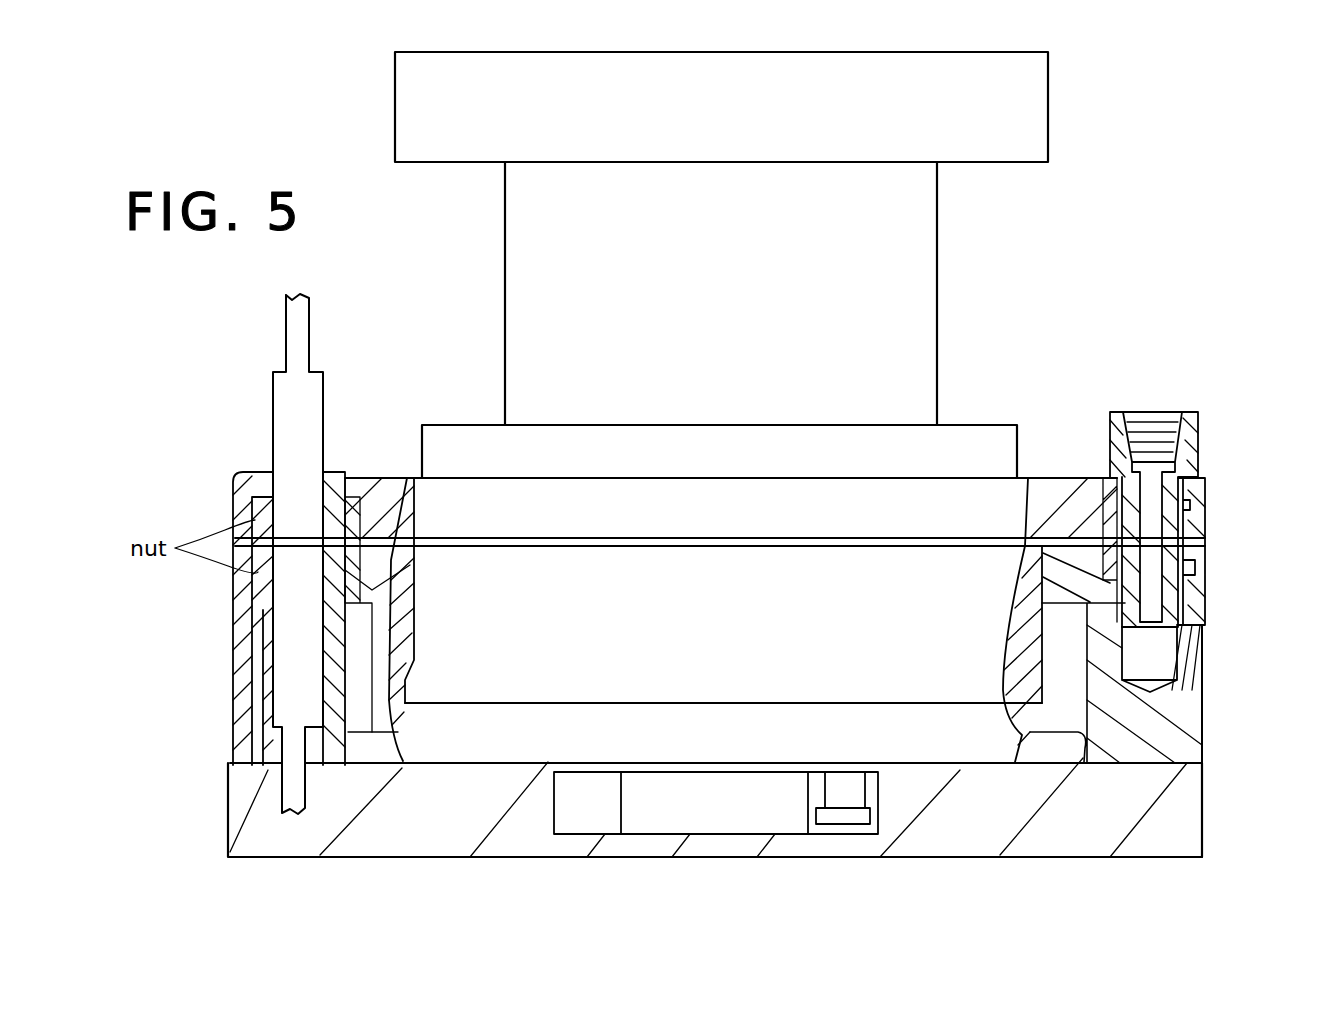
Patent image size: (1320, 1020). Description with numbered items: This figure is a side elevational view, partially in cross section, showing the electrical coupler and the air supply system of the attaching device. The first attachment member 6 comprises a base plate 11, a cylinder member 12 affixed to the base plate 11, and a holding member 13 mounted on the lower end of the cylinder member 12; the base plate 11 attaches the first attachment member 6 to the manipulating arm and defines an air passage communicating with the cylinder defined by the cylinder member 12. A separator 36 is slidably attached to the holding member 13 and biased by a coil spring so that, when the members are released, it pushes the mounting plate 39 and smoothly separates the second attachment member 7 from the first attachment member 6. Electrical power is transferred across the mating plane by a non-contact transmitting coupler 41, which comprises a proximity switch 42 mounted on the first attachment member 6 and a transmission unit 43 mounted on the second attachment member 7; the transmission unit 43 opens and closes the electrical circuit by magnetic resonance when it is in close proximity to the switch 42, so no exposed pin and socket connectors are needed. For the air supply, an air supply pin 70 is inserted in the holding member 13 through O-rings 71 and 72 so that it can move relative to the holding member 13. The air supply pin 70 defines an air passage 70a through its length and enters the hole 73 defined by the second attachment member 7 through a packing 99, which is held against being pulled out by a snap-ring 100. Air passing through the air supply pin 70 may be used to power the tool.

The first attachment member 6 is at (940, 285).
The second attachment member 7 is at (1202, 707).
The base plate 11 is at (1030, 120).
The cylinder member 12 is at (918, 210).
The holding member 13 is at (1047, 488).
The separator 36 is at (785, 797).
The mounting plate 39 is at (1178, 806).
The transmitting coupler 41 is at (289, 596).
The proximity switch 42 is at (290, 452).
The transmission unit 43 is at (283, 645).
The air supply pin 70 is at (1187, 457).
The air passage 70a is at (1153, 487).
The O-ring 71 is at (1183, 497).
The O-ring 72 is at (1193, 525).
The hole 73 is at (1183, 610).
The packing 99 is at (1185, 588).
The snap-ring 100 is at (1195, 560).